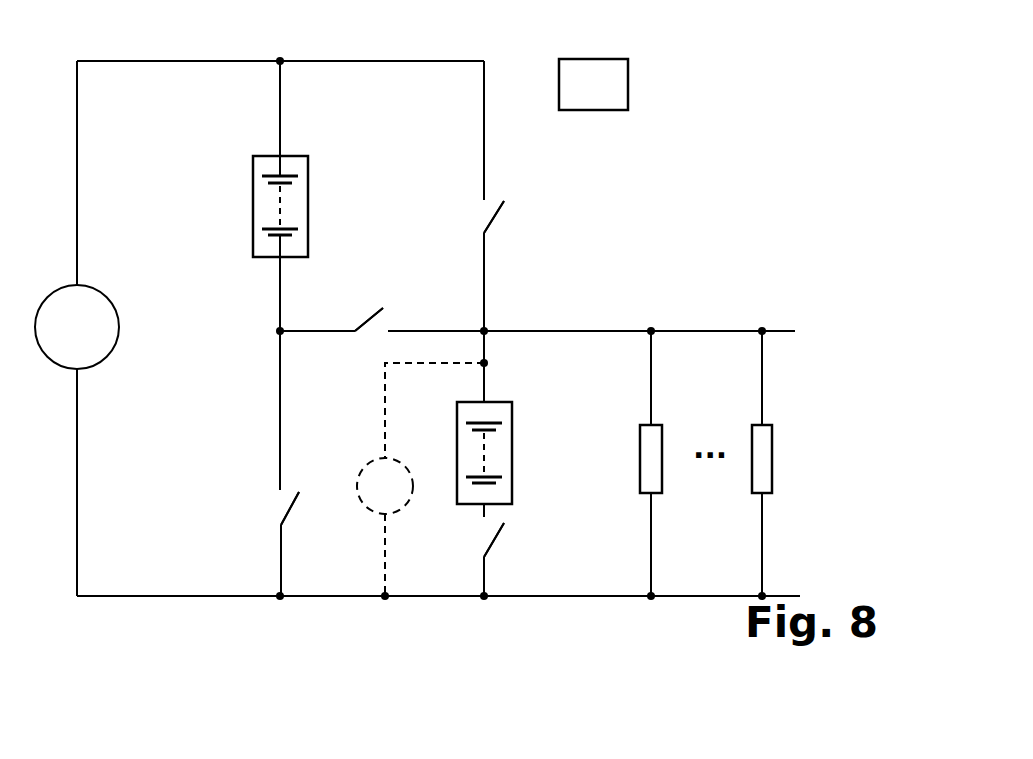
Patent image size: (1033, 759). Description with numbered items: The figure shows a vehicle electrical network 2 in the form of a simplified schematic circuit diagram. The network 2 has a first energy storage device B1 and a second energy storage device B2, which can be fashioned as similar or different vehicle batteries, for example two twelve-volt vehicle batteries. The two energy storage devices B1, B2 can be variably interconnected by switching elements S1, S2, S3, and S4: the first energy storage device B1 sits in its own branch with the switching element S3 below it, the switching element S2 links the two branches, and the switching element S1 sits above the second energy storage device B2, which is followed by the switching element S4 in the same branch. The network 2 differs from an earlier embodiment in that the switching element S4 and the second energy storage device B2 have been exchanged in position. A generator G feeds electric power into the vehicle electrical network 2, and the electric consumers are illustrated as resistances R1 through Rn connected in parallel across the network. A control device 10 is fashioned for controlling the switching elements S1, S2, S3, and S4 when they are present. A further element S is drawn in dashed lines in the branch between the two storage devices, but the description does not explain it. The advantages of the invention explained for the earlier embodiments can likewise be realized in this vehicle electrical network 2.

The vehicle electrical network 2 is at (673, 128).
The control device 10 is at (595, 110).
The generator G is at (77, 327).
The first energy storage device B1 is at (302, 206).
The second energy storage device B2 is at (507, 453).
The switching element S1 is at (512, 227).
The switching element S2 is at (386, 300).
The switching element S3 is at (306, 522).
The switching element S4 is at (510, 552).
The sensor S is at (385, 486).
The resistance R1 is at (670, 449).
The resistance Rn is at (781, 446).